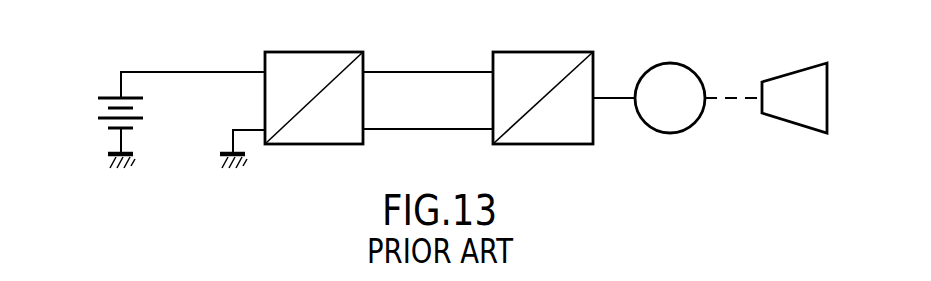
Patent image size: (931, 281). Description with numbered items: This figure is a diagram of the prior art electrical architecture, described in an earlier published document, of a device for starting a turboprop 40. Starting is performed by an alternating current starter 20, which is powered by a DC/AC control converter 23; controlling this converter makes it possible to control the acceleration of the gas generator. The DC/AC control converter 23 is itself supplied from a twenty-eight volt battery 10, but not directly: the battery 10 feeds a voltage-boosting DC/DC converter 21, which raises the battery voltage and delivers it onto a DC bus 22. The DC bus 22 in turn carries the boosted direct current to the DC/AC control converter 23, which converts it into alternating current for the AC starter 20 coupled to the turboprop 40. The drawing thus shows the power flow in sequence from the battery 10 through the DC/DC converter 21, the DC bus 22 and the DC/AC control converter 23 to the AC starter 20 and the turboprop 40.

The battery 10 is at (105, 96).
The voltage-boosting DC/DC converter 21 is at (310, 59).
The DC bus 22 is at (432, 131).
The DC/AC control converter 23 is at (543, 59).
The alternating current (AC) starter 20 is at (670, 67).
The turboprop 40 is at (797, 75).